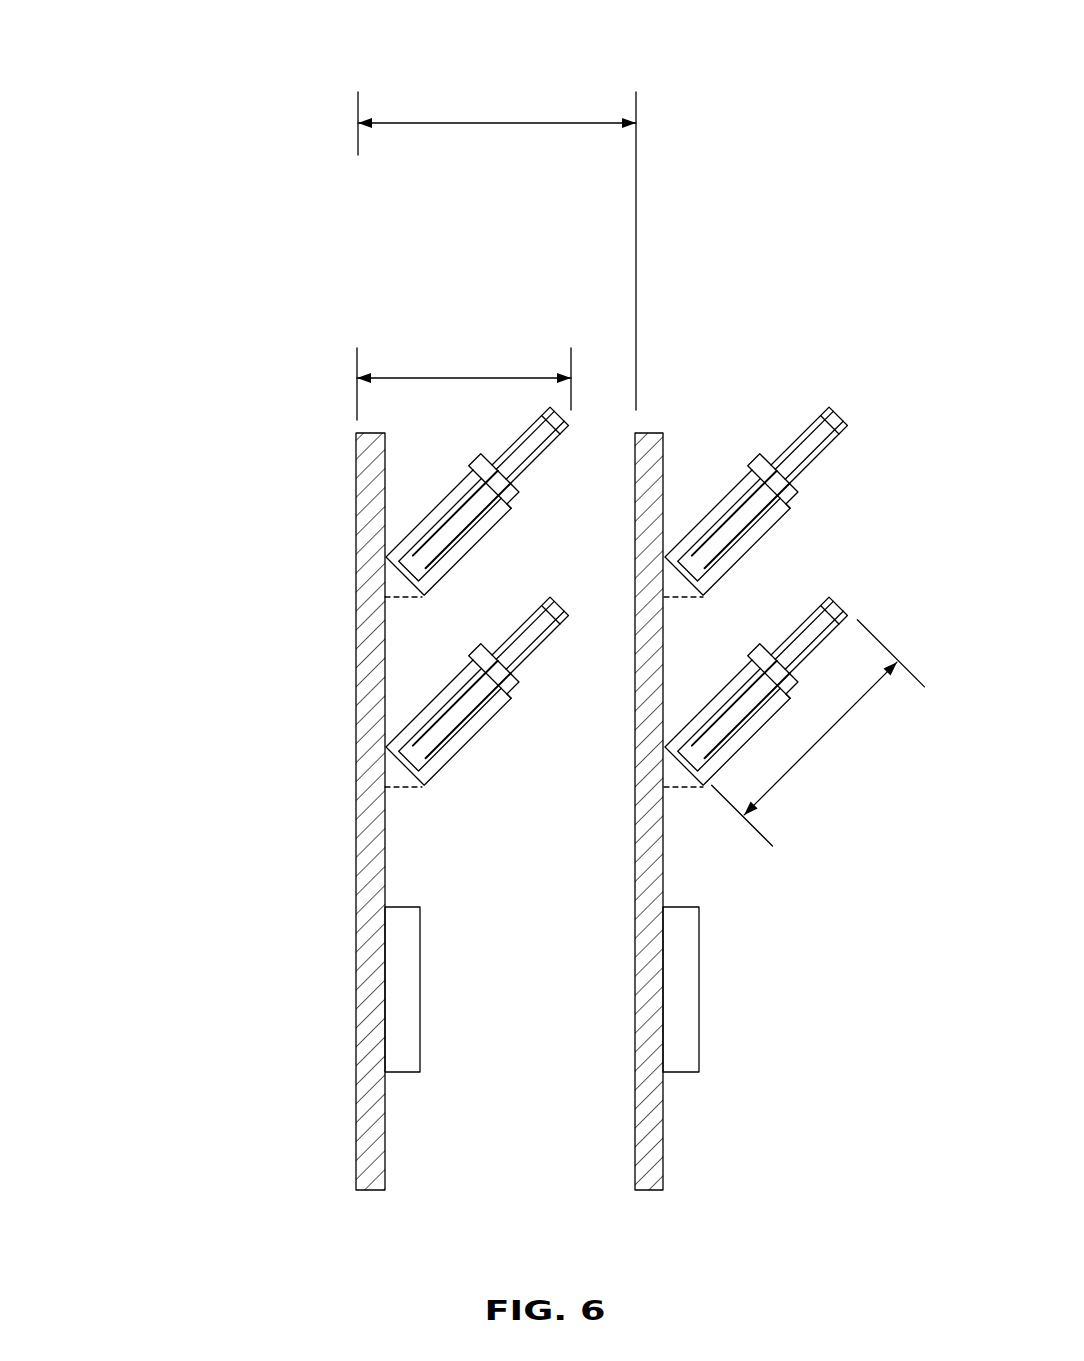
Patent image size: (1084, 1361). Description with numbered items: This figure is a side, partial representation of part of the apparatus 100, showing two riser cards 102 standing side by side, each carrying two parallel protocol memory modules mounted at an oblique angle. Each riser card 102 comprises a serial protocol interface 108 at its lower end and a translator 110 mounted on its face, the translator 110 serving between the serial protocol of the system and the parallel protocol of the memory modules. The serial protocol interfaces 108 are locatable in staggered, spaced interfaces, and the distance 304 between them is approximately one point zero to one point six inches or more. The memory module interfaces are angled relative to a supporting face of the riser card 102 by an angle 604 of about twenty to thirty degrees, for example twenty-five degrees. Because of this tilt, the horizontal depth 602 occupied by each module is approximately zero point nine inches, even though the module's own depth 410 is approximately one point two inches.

The apparatus 100 is at (121, 1210).
The riser card 102 is at (322, 788).
The serial protocol interface 108 is at (367, 1222).
The translator 110 is at (438, 973).
The distance between staggered serial protocol interfaces 304 is at (475, 123).
The depth of the parallel protocol memory module 410 is at (850, 712).
The depth of the parallel protocol memory module 602 is at (475, 378).
The angle 604 is at (430, 503).